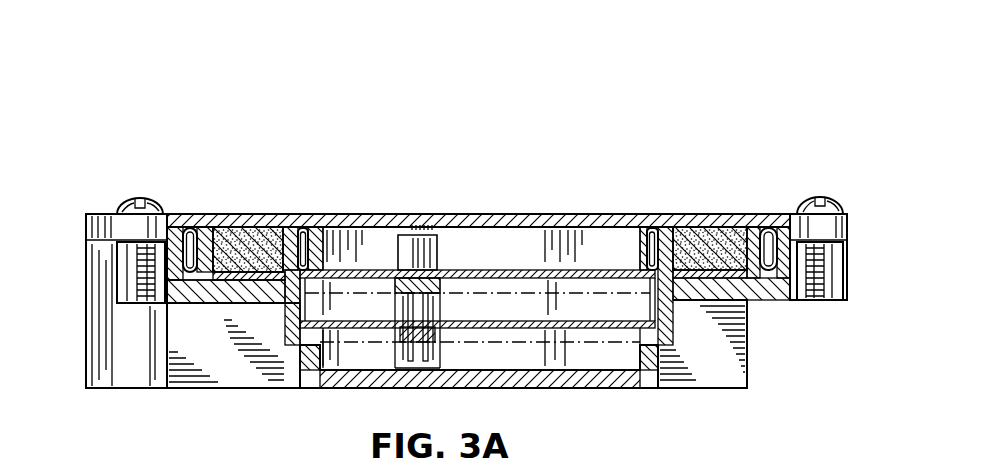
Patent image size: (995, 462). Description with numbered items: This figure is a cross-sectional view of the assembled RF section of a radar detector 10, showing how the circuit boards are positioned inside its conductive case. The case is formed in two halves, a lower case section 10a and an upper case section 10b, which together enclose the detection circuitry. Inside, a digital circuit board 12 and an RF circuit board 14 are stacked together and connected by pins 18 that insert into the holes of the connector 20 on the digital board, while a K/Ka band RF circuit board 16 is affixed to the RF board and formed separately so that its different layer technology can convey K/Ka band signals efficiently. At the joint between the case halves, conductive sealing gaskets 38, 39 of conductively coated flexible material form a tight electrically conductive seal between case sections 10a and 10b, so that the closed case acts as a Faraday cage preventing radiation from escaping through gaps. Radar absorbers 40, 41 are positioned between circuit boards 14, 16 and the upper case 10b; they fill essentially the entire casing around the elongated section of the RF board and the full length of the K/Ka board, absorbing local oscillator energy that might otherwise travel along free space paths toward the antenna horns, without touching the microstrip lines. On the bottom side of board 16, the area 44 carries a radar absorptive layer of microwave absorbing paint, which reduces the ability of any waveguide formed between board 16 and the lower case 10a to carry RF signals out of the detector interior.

The radar detector 10 is at (103, 136).
The lower case section 10a is at (625, 388).
The upper case section 10b is at (489, 215).
The digital circuit board 12 is at (531, 388).
The RF circuit board 14 is at (460, 269).
The K/Ka band RF circuit board 16 is at (234, 288).
The pins 18 is at (430, 310).
The sockets 20 is at (438, 338).
The conductive sealing gasket 38 is at (188, 214).
The conductive sealing gasket 39 is at (306, 214).
The radar absorber 40 is at (714, 250).
The radar absorber 41 is at (242, 214).
The area of radar absorptive layer 44 is at (237, 284).